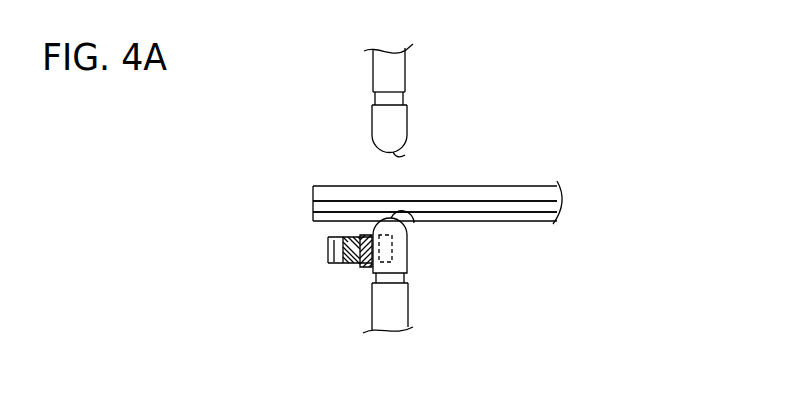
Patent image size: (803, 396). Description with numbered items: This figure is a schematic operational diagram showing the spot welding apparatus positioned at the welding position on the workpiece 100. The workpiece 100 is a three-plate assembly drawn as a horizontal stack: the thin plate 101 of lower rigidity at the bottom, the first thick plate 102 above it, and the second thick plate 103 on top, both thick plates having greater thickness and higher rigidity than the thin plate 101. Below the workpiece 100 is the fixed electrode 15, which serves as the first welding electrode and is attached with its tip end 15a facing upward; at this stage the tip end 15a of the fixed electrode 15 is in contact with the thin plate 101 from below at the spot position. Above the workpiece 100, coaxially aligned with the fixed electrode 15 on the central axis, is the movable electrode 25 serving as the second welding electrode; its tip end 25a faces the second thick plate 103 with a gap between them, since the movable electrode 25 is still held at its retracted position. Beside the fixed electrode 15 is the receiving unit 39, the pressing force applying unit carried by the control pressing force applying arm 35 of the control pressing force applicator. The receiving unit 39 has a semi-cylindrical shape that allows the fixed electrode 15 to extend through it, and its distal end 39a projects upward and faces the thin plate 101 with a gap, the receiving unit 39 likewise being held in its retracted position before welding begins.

The movable electrode 25 is at (398, 115).
The tip end of movable electrode 25a is at (405, 154).
The workpiece 100 is at (181, 142).
The second thick plate 103 is at (313, 191).
The first thick plate 102 is at (313, 206).
The thin plate 101 is at (313, 217).
The fixed electrode 15 is at (402, 258).
The tip end of fixed electrode 15a is at (410, 211).
The receiving unit 39 is at (327, 250).
The distal end of receiving unit 39a is at (343, 238).
The control pressing force applying arm 35 is at (333, 262).